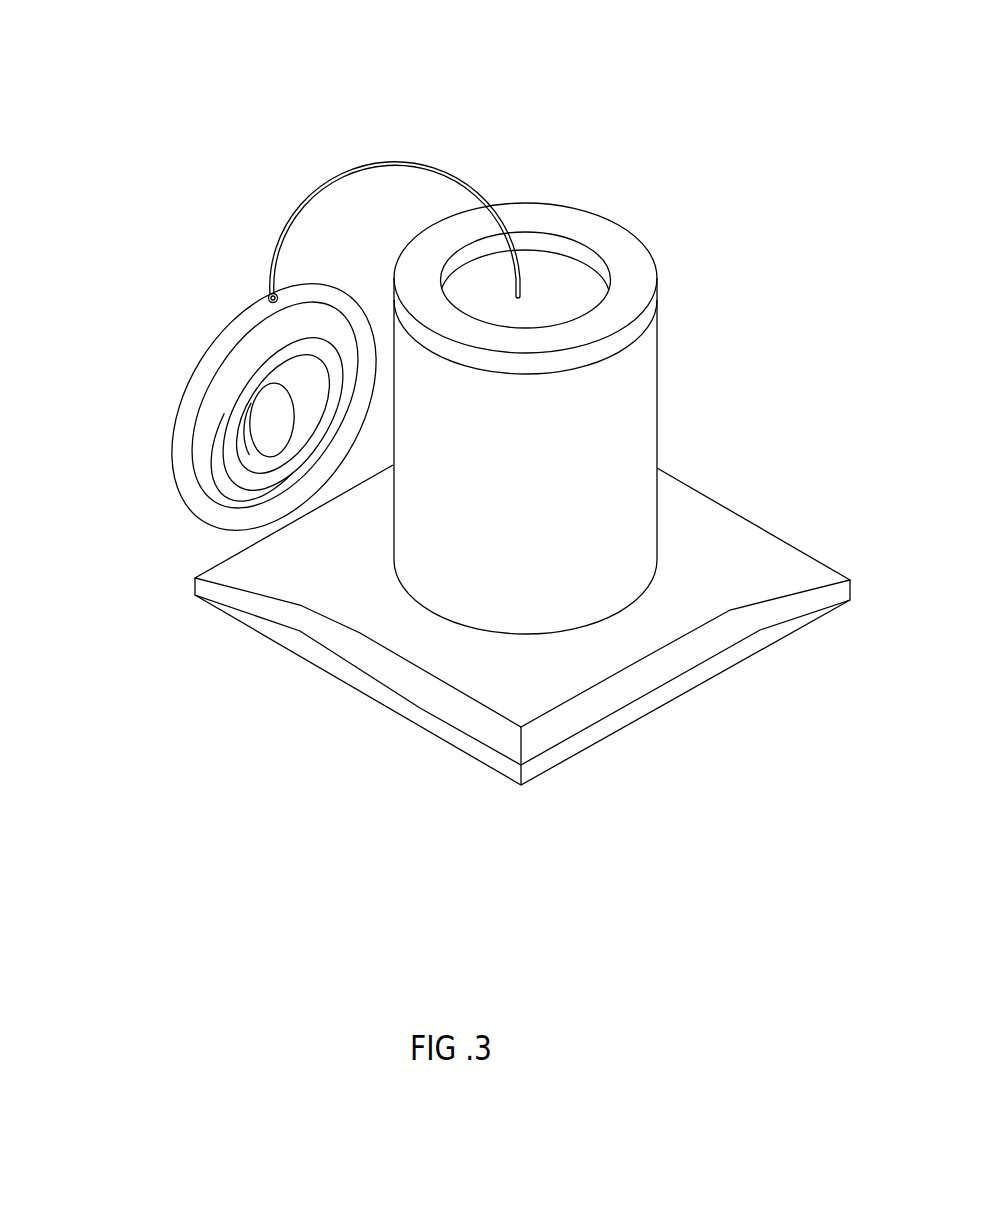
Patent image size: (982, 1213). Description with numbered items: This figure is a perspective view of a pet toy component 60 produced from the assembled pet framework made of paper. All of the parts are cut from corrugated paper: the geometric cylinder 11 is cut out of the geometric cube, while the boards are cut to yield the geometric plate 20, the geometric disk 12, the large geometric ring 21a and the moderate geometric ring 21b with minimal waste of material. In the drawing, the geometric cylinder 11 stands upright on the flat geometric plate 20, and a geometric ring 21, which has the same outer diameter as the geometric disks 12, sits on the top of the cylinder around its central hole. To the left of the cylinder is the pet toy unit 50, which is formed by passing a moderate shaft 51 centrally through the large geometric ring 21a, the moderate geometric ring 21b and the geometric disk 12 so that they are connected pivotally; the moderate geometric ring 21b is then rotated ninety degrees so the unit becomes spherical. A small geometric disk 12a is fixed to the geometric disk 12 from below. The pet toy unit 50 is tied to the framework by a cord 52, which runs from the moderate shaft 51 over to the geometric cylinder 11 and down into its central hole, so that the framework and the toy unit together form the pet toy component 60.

The pet toy component 60 is at (307, 369).
The cord 52 is at (420, 163).
The geometric ring 21 is at (615, 241).
The moderate shaft 51 is at (270, 293).
The pet toy unit 50 is at (256, 479).
The small geometric disk 12a is at (246, 402).
The geometric disk 12 is at (240, 428).
The geometric cylinder 11 is at (550, 455).
The large geometric ring 21a is at (210, 507).
The moderate geometric ring 21b is at (280, 477).
The geometric plate 20 is at (720, 580).